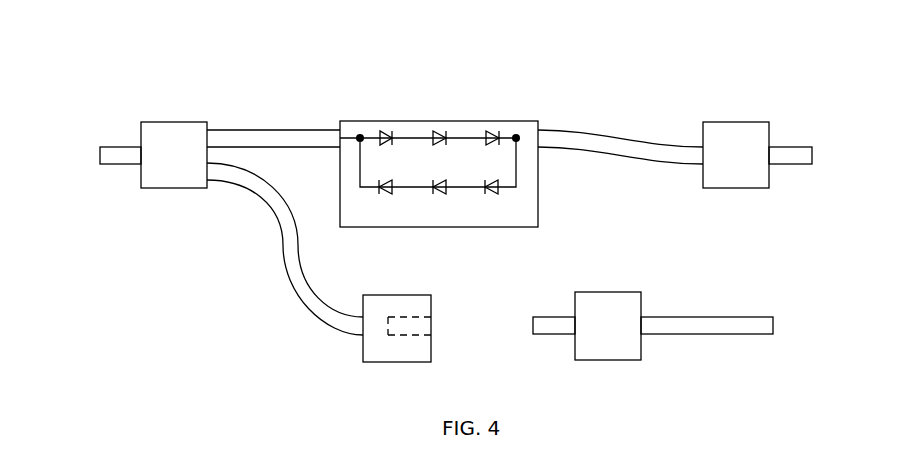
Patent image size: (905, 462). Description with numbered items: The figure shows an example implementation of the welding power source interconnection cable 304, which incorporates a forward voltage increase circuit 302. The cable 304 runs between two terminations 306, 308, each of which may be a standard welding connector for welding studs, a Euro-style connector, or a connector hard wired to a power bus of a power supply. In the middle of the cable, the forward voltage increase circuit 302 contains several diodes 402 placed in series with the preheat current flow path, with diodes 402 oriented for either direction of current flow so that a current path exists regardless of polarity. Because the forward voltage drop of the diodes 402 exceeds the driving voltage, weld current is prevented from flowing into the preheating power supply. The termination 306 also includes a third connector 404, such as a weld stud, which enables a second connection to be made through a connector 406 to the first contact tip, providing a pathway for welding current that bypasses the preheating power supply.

The forward voltage increase circuit 302 is at (329, 109).
The welding power source interconnection cable 304 is at (85, 62).
The termination 306 is at (150, 122).
The termination 308 is at (703, 122).
The diode 402 is at (387, 131).
The third connector 404 is at (397, 295).
The connector 406 is at (586, 292).